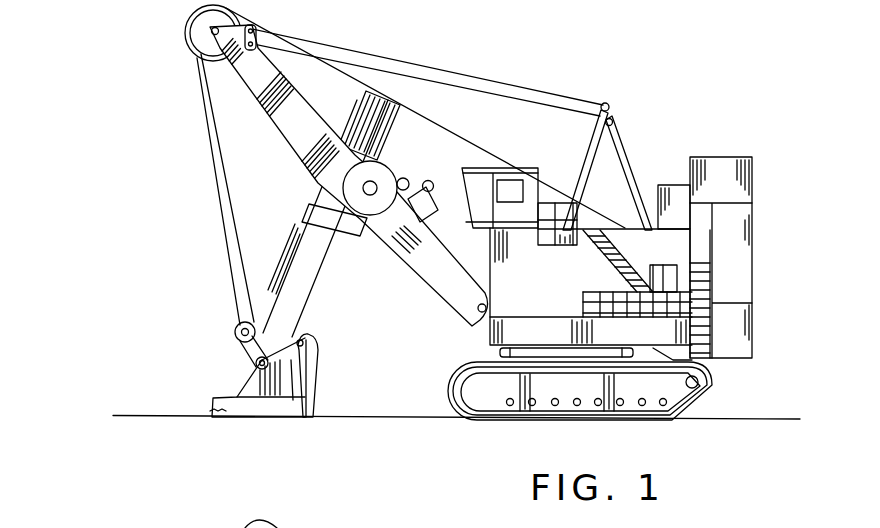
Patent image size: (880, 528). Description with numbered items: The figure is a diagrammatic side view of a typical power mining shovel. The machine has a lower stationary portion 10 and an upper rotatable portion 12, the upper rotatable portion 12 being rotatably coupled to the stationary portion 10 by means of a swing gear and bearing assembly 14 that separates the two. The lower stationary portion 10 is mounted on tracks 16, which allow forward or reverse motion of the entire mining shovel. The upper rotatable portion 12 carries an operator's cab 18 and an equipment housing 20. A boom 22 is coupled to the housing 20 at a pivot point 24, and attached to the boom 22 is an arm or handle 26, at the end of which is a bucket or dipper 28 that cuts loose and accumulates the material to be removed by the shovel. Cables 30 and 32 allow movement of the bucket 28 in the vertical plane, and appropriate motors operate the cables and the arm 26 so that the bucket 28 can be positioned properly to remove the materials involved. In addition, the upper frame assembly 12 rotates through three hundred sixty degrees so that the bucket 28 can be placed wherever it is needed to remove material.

The lower stationary portion 10 is at (476, 212).
The upper rotatable portion 12 is at (740, 157).
The gear and bearing assembly 14 is at (500, 351).
The tracks 16 is at (713, 379).
The operator's cab 18 is at (498, 168).
The equipment housing 20 is at (554, 282).
The boom 22 is at (278, 108).
The pivot point 24 is at (478, 309).
The arm or handle 26 is at (366, 114).
The bucket or dipper 28 is at (320, 378).
The cable 30 is at (206, 147).
The cable 32 is at (447, 128).